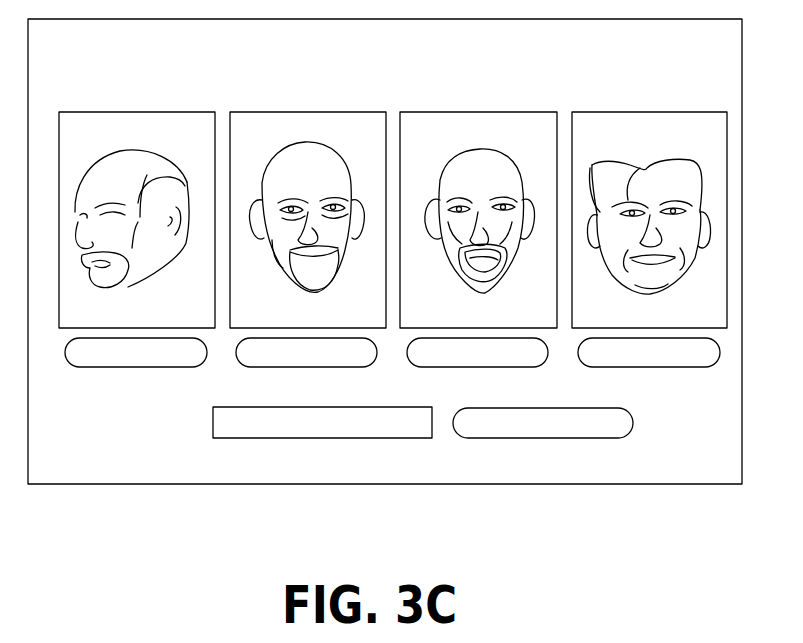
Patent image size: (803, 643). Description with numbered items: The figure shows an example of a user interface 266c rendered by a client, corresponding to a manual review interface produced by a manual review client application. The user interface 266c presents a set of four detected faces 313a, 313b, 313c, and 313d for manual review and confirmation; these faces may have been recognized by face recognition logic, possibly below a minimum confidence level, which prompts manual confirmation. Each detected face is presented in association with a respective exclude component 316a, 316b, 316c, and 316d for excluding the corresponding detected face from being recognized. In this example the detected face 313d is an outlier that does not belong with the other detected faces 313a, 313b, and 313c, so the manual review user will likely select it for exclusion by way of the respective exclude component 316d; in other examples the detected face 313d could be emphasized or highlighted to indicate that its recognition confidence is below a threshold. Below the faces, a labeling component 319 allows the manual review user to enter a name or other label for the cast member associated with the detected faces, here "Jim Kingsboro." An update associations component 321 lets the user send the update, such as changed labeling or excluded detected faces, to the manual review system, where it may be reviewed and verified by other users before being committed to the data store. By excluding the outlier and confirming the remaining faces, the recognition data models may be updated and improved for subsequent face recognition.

The user interface 266c is at (43, 453).
The detected face 313a is at (136, 128).
The detected face 313b is at (287, 128).
The detected face 313c is at (447, 128).
The detected face 313d is at (610, 128).
The exclude component 316a is at (172, 362).
The exclude component 316b is at (352, 362).
The exclude component 316c is at (528, 362).
The exclude component 316d is at (706, 362).
The labeling component 319 is at (393, 422).
The update associations component 321 is at (618, 422).